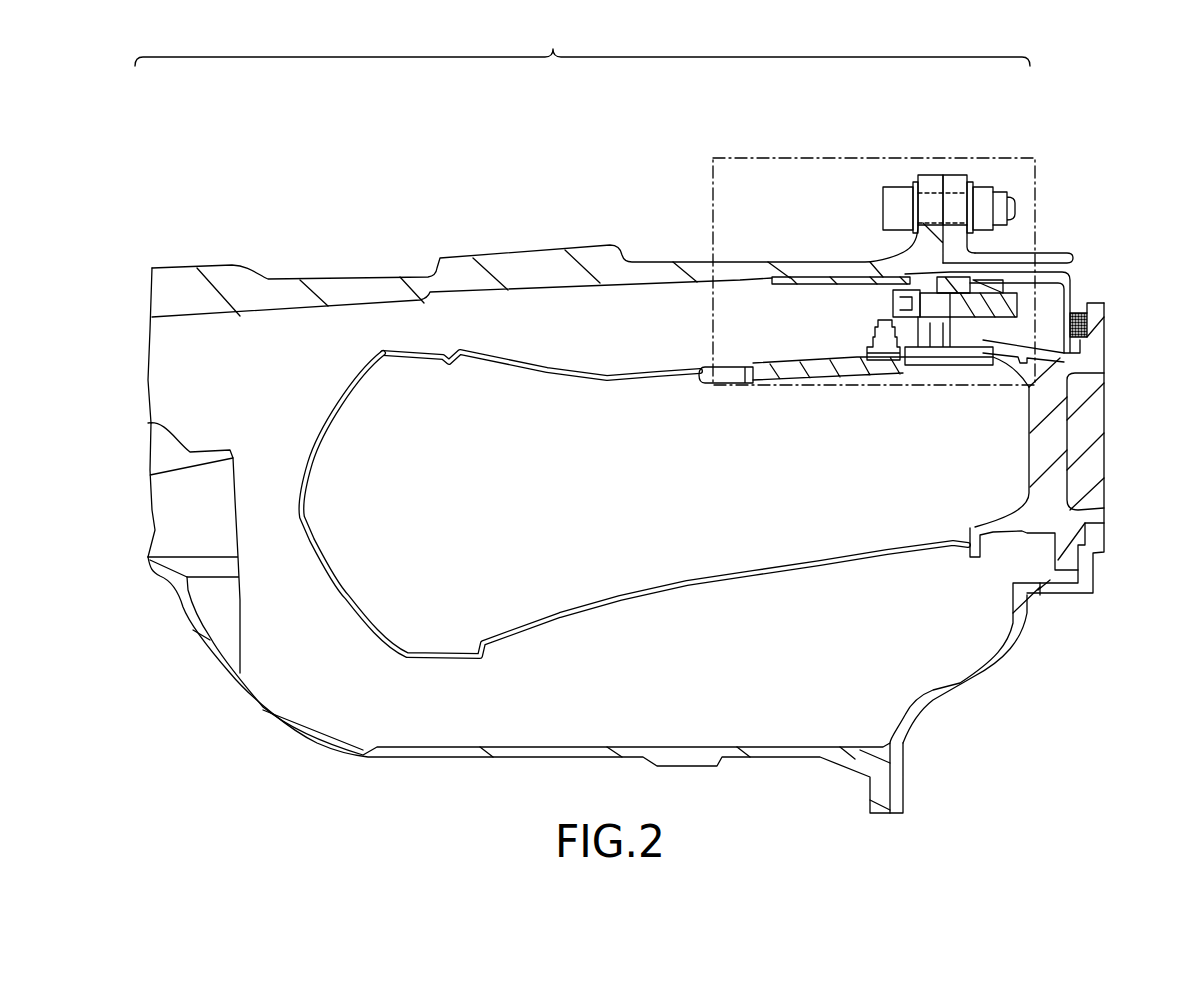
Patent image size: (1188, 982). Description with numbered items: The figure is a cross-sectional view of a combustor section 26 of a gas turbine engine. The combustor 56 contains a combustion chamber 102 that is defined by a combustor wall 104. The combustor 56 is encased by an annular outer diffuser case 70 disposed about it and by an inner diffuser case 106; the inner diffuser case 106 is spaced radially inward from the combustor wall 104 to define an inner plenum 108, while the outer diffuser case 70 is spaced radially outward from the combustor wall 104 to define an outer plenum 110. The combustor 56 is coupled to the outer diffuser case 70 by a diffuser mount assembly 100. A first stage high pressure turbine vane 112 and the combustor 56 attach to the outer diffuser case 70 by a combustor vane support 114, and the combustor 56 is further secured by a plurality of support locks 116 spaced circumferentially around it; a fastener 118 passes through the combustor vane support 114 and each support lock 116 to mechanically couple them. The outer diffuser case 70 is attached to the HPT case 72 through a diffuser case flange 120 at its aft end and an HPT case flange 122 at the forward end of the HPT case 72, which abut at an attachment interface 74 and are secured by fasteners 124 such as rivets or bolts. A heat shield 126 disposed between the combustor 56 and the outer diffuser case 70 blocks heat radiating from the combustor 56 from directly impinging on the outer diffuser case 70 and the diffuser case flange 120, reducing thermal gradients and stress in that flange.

The combustor section 26 is at (582, 39).
The combustor 56 is at (620, 435).
The outer diffuser case 70 is at (210, 282).
The HPT case 72 is at (1062, 252).
The attachment interface 74 is at (909, 163).
The diffuser mount assembly 100 is at (748, 157).
The combustion chamber 102 is at (493, 504).
The combustor wall 104 is at (333, 410).
The inner diffuser case 106 is at (372, 757).
The inner plenum 108 is at (750, 665).
The outer plenum 110 is at (636, 332).
The vane 112 is at (1050, 440).
The combustor vane support 114 is at (1085, 292).
The support lock 116 is at (910, 335).
The fastener 118 is at (946, 308).
The diffuser case flange 120 is at (930, 178).
The HPT case flange 122 is at (957, 178).
The fastener 124 is at (893, 200).
The heat shield 126 is at (806, 286).